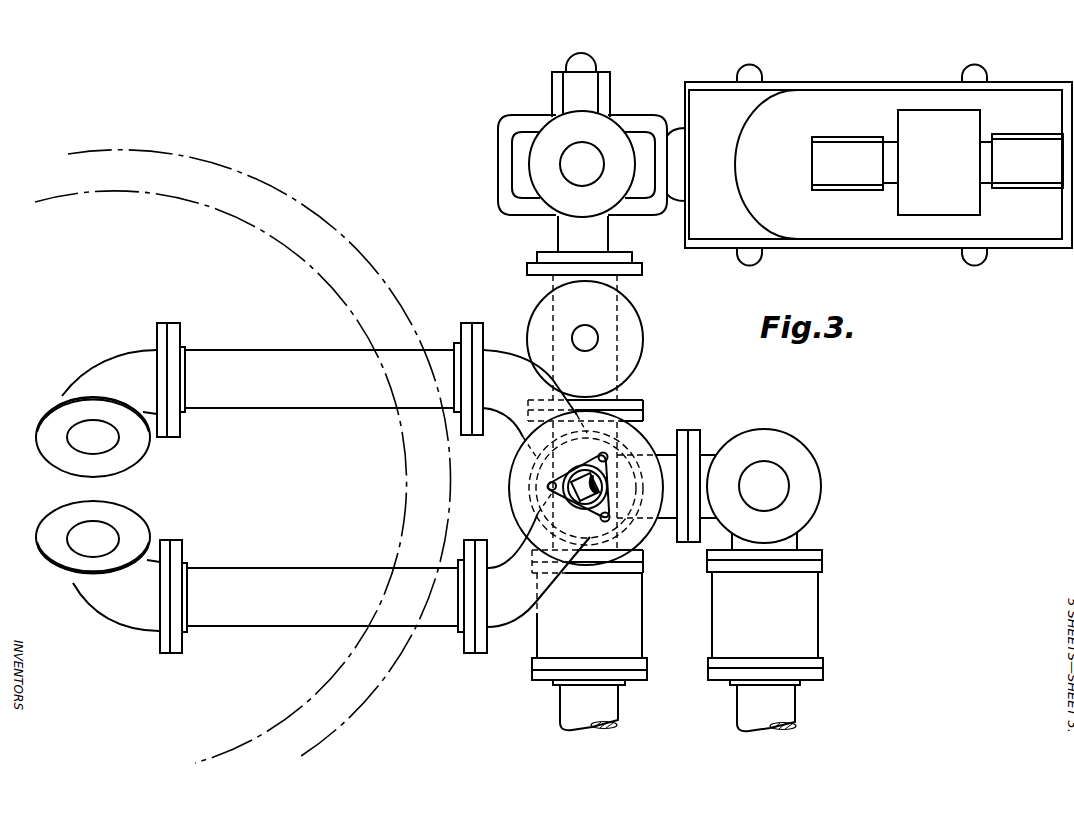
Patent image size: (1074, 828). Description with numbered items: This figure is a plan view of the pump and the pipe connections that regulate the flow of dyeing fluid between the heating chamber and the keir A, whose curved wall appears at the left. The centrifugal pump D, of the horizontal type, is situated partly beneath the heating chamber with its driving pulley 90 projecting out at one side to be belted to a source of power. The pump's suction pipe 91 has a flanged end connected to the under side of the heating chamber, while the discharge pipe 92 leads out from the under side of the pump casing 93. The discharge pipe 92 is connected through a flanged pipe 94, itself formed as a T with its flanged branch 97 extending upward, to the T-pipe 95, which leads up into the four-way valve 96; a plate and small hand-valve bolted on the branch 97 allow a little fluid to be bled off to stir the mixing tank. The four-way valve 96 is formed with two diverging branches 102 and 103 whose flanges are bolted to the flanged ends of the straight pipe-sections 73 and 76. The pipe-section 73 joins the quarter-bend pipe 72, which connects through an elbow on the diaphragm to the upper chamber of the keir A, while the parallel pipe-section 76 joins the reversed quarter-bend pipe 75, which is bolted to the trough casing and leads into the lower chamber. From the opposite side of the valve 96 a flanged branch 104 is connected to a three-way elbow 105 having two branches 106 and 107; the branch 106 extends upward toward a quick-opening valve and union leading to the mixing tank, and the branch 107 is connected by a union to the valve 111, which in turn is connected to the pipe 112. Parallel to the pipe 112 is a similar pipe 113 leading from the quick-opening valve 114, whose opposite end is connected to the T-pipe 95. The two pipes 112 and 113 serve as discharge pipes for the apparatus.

The keir A is at (350, 268).
The centrifugal pump D is at (878, 165).
The quarter-bend pipe 72 is at (98, 566).
The straight pipe-section 73 is at (309, 596).
The quarter-bend pipe 75 is at (96, 413).
The straight pipe-section 76 is at (305, 380).
The driving pulley 90 is at (939, 162).
The suction pipe 91 is at (591, 164).
The discharge pipe 92 is at (584, 245).
The casing 93 is at (581, 85).
The flanged pipe 94 is at (610, 393).
The T-pipe 95 is at (638, 417).
The four-way valve 96 is at (635, 440).
The flanged branch 97 is at (625, 312).
The diverging branch 102 is at (524, 573).
The diverging branch 103 is at (520, 390).
The flanged branch 104 is at (667, 463).
The three-way elbow 105 is at (712, 520).
The branch 106 is at (815, 477).
The branch 107 is at (797, 538).
The valve 111 is at (765, 617).
The pipe 112 is at (766, 708).
The pipe 113 is at (589, 707).
The quick-opening valve 114 is at (589, 617).